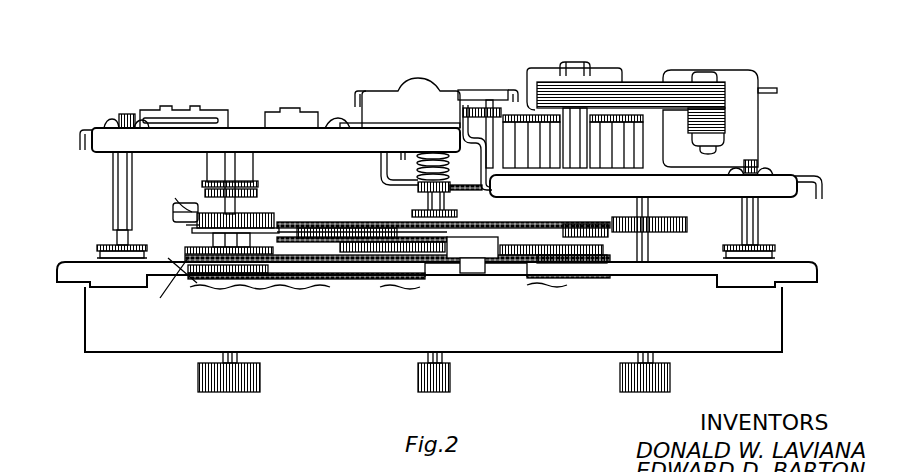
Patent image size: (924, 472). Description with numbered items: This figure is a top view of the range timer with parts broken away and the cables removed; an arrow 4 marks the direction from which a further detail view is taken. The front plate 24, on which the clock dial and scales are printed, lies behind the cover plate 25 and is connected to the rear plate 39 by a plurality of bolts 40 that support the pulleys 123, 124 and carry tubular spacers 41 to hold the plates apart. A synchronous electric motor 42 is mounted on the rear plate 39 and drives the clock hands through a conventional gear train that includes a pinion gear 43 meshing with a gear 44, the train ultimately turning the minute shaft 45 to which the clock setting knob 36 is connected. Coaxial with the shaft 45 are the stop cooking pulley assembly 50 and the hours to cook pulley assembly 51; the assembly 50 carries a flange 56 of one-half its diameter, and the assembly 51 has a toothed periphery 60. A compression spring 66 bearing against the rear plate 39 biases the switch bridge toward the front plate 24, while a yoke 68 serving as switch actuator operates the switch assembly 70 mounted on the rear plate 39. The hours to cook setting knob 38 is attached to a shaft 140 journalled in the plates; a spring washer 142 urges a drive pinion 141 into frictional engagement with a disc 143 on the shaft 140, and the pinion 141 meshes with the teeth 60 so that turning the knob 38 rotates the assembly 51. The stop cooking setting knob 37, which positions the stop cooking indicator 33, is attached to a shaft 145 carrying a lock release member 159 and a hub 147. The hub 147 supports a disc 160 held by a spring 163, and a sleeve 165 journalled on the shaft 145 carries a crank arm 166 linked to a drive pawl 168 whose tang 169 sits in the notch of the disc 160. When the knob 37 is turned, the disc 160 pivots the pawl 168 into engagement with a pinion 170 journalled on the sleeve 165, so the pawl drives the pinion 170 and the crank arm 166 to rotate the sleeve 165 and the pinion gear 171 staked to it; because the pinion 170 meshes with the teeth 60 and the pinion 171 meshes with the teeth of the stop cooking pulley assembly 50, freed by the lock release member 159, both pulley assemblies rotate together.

The section line 4 is at (331, 12).
The front plate 24 is at (800, 272).
The cover plate 25 is at (561, 345).
The indicator 33 is at (468, 262).
The setting knob 36 is at (450, 380).
The stop cooking setting knob 37 is at (238, 392).
The hours to cook setting knob 38 is at (640, 392).
The rear plate 39 is at (260, 136).
The bolts 40 is at (130, 114).
The tubular spacers 41 is at (113, 190).
The synchronous electric motor 42 is at (600, 95).
The pinion gear 43 is at (497, 98).
The gear 44 is at (470, 108).
The shaft 45 is at (428, 357).
The stop cooking pulley assembly 50 is at (612, 275).
The hours to cook pulley assembly 51 is at (338, 207).
The flange 56 is at (380, 245).
The teeth 60 is at (495, 222).
The compression spring 66 is at (418, 166).
The yoke 68 is at (393, 182).
The switch assembly 70 is at (181, 117).
The pulley 123 is at (775, 252).
The pulley 124 is at (100, 248).
The shaft 140 is at (650, 355).
The drive pinion 141 is at (700, 222).
The spring washer 142 is at (607, 223).
The disc 143 is at (667, 238).
The shaft 145 is at (237, 357).
The hub 147 is at (253, 194).
The lock release member 159 is at (262, 264).
The disc 160 is at (257, 193).
The spring 163 is at (268, 208).
The sleeve 165 is at (213, 238).
The crank arm 166 is at (173, 207).
The drive pawl 168 is at (178, 202).
The tang 169 is at (205, 200).
The pinion 170 is at (186, 226).
The pinion gear 171 is at (277, 288).